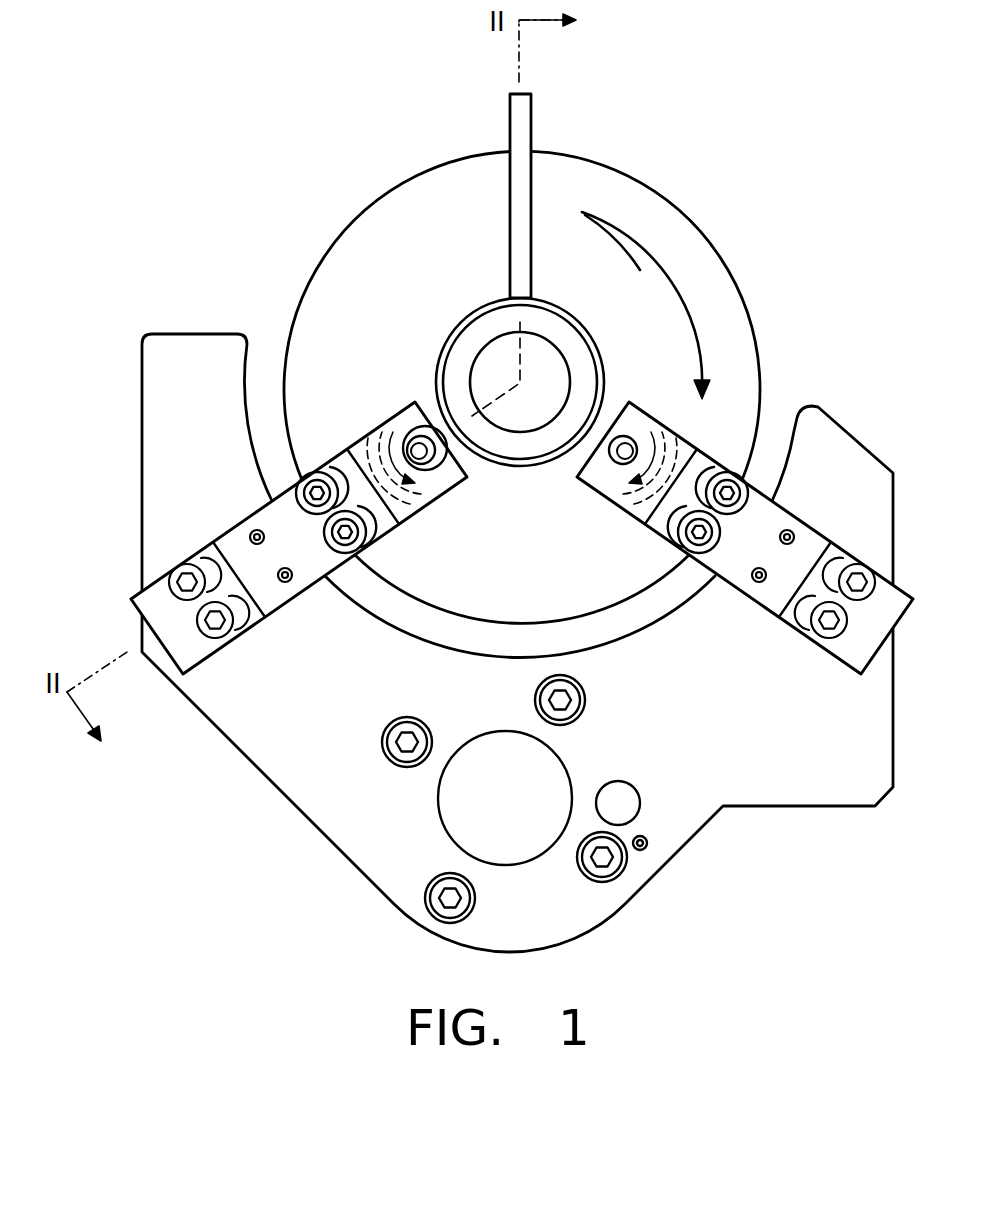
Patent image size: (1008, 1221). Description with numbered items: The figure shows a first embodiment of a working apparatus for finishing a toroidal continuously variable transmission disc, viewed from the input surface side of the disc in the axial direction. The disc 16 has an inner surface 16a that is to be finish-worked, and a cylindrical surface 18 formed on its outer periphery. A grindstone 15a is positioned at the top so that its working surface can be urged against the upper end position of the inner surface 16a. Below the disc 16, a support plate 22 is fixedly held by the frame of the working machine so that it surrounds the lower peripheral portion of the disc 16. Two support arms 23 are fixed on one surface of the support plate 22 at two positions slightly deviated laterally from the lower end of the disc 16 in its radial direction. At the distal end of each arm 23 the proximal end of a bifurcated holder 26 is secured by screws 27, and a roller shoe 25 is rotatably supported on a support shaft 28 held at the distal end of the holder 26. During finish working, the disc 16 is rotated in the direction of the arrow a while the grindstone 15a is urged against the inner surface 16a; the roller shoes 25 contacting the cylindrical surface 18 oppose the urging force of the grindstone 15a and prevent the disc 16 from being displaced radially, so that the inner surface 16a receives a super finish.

The grindstone 15a is at (509, 118).
The disc 16 is at (637, 193).
The inner surface 16a is at (673, 232).
The cylindrical surface 18 is at (352, 210).
The support plate 22 is at (844, 777).
The support arms 23 is at (215, 538).
The roller shoes 25 is at (373, 423).
The bifurcated holder 26 is at (356, 446).
The screws 27 is at (337, 540).
The support shaft 28 is at (453, 452).
The arrow a is at (675, 285).